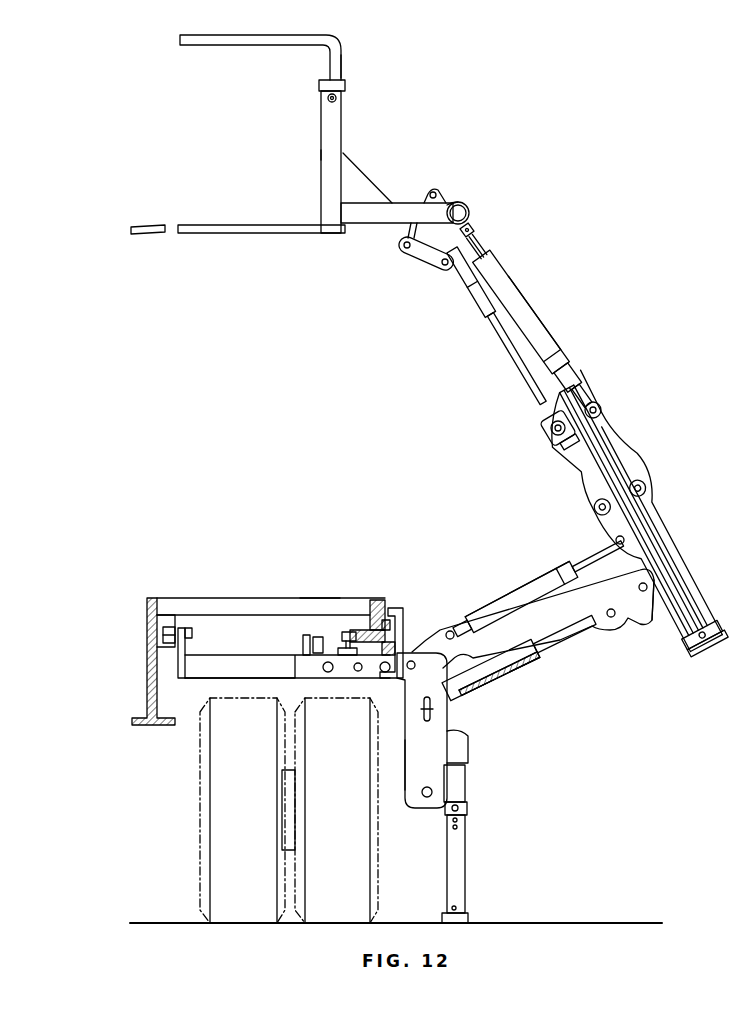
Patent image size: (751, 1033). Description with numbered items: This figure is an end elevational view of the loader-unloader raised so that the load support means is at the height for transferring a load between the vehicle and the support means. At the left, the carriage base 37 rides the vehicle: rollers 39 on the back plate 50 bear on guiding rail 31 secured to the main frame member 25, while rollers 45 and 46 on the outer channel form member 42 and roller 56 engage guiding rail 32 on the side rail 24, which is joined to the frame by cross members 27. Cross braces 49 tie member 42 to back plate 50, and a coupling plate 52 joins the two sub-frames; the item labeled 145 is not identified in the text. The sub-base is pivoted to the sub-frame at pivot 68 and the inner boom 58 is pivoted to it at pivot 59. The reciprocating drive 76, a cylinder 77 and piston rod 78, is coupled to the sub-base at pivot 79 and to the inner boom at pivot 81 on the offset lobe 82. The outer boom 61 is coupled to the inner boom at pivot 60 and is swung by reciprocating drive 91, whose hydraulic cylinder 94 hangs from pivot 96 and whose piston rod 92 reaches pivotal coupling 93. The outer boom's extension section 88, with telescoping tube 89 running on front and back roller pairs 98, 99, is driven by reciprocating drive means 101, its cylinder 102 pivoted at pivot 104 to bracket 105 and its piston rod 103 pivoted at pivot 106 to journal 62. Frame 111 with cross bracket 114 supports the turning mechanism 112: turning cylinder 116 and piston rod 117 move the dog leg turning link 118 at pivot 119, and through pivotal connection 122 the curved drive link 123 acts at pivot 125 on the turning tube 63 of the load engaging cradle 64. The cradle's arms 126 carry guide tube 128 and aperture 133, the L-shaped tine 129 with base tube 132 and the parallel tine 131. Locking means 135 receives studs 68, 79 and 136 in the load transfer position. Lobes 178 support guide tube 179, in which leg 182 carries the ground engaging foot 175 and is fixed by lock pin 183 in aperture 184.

The side rail 24 is at (376, 600).
The main frame member 25 is at (148, 690).
The cross member 27 is at (225, 599).
The guiding rail 31 is at (161, 626).
The guiding rail 32 is at (350, 631).
The base 37 is at (234, 655).
The roller 39 is at (170, 630).
The outer channel form member 42 is at (401, 608).
The roller 45 is at (387, 620).
The roller 46 is at (391, 645).
The cross brace 49 is at (202, 674).
The back plate 50 is at (189, 648).
The coupling plate 52 is at (306, 635).
The roller 56 is at (318, 637).
The inner boom 58 is at (524, 646).
The pivot 59 is at (413, 673).
The pivot 60 is at (646, 593).
The outer boom 61 is at (622, 441).
The journal 62 is at (470, 208).
The turning tube 63 is at (461, 204).
The load engaging cradle 64 is at (318, 142).
The pivot 68 is at (381, 673).
The reciprocating drive 76 is at (502, 692).
The cylinder 77 is at (468, 691).
The piston rod 78 is at (560, 636).
The pivot 79 is at (424, 714).
The pivot 81 is at (611, 619).
The lobe 82 is at (640, 598).
The extension section 88 is at (525, 297).
The telescoping tube 89 is at (556, 351).
The reciprocating drive 91 is at (523, 579).
The piston rod 92 is at (592, 556).
The pivotal coupling 93 is at (615, 538).
The hydraulic cylinder 94 is at (496, 606).
The pivot 96 is at (453, 629).
The front roller pair 98 is at (548, 427).
The back roller pair 99 is at (652, 486).
The reciprocating drive means 101 is at (668, 534).
The cylinder 102 is at (679, 561).
The piston rod 103 is at (489, 263).
The pivot 104 is at (691, 646).
The bracket 105 is at (726, 652).
The pivot 106 is at (475, 231).
The frame 111 is at (554, 322).
The turning mechanism 112 is at (476, 304).
The cross bracket 114 is at (588, 383).
The turning cylinder 116 is at (507, 331).
The piston rod 117 is at (470, 291).
The dog leg turning link 118 is at (410, 258).
The pivot 119 is at (444, 269).
The pivotal connection 122 is at (396, 251).
The drive link 123 is at (423, 202).
The pivot 125 is at (433, 189).
The arm 126 is at (330, 236).
The guide tube 128 is at (343, 136).
The tine 129 is at (246, 40).
The tine 131 is at (200, 225).
The base tube 132 is at (343, 56).
The aperture 133 is at (338, 99).
The locking means 135 is at (407, 777).
The stud 136 is at (427, 798).
The plate 145 is at (278, 597).
The ground engaging foot 175 is at (470, 918).
The lobe 178 is at (469, 750).
The guide tube 179 is at (466, 787).
The leg 182 is at (466, 870).
The lock pin 183 is at (468, 810).
The aperture 184 is at (459, 827).